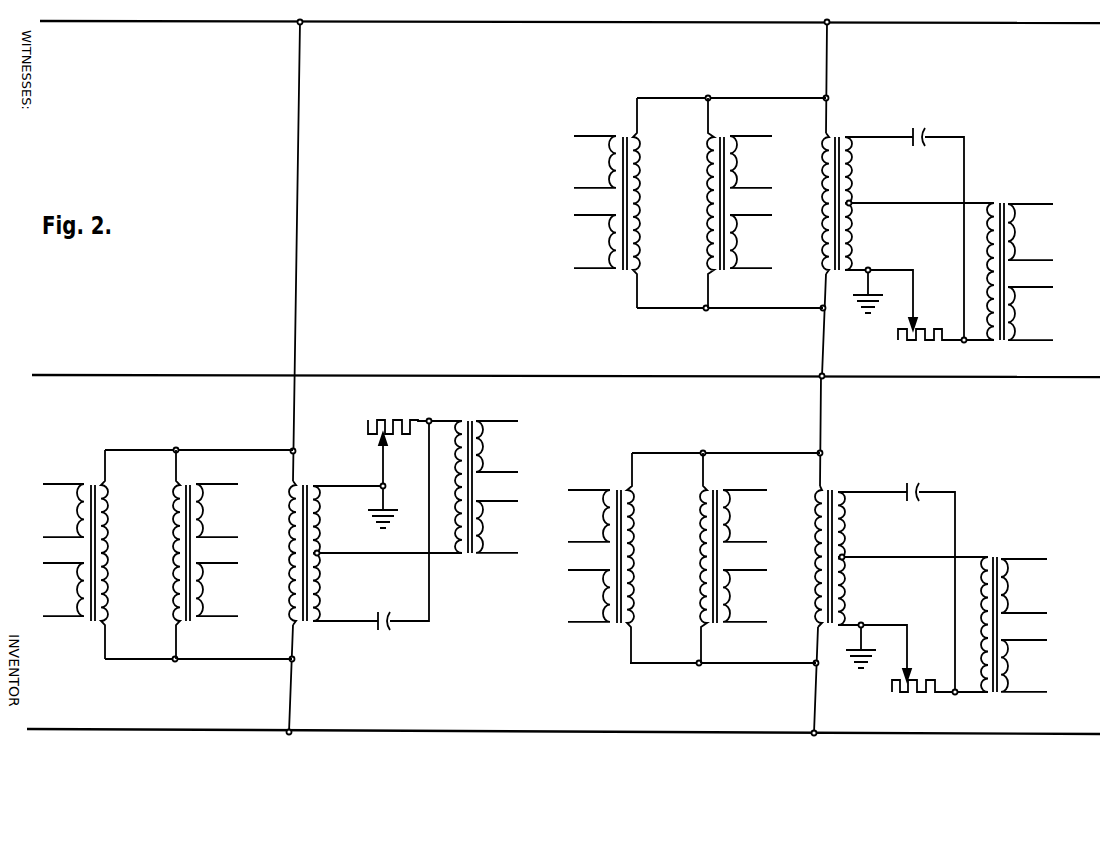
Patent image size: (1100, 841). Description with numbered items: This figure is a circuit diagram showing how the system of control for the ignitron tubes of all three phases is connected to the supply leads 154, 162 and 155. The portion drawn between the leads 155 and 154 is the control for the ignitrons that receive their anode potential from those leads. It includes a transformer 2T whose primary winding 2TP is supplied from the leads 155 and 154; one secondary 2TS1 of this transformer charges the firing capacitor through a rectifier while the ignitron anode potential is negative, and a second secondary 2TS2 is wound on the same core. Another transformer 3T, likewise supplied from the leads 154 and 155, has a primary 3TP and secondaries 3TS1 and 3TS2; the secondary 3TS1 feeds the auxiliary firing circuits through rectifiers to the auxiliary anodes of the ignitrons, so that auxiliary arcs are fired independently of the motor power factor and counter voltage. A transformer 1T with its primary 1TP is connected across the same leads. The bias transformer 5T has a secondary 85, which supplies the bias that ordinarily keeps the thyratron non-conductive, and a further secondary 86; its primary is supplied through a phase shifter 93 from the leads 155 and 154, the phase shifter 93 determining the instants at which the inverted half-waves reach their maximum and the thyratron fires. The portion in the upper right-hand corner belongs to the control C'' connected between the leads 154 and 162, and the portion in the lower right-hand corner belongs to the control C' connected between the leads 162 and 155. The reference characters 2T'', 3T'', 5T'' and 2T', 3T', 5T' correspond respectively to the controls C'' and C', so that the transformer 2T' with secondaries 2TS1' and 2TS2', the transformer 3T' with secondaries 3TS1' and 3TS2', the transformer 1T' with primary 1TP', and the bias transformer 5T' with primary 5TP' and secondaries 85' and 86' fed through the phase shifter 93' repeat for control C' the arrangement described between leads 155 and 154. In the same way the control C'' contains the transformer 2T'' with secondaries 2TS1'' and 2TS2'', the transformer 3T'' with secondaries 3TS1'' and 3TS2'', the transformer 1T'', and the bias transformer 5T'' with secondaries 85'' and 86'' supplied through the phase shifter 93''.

The supply lead 154 is at (134, 23).
The supply lead 162 is at (118, 375).
The supply lead 155 is at (100, 729).
The first transformer 1T is at (315, 541).
The primary winding of first transformer 1TP is at (273, 553).
The transformer 2T is at (82, 533).
The primary winding 2TP is at (107, 498).
The secondary 2TS1 is at (52, 589).
The second secondary winding of second transformer 2TS2 is at (47, 510).
The transformer 3T is at (199, 538).
The primary winding of third transformer 3TP is at (154, 554).
The secondary 3TS1 is at (226, 510).
The second secondary winding of third transformer 3TS2 is at (226, 589).
The bias transformer 5T is at (469, 501).
The secondary 85 is at (497, 527).
The secondary winding of fifth transformer 86 is at (497, 446).
The phase shifter 93 is at (387, 525).
The control C' is at (755, 547).
The first transformer of second channel 1T' is at (844, 543).
The primary winding of first transformer of second channel 1TP' is at (800, 556).
The transformer 2T' is at (618, 558).
The secondary 2TS1' is at (581, 516).
The second secondary winding 2TS2' is at (581, 596).
The transformer 3T' is at (719, 558).
The secondary 3TS1' is at (751, 596).
The second secondary winding 3TS2' is at (750, 516).
The bias transformer 5T' is at (999, 613).
The primary 5TP' is at (999, 637).
The secondary 85' is at (1024, 586).
The secondary winding 86' is at (1024, 666).
The phase shifter 93' is at (913, 589).
The control C'' is at (731, 188).
The first transformer of third channel 1T'' is at (842, 187).
The transformer 2T'' is at (622, 203).
The secondary 2TS1'' is at (584, 162).
The second secondary winding 2TS2'' is at (584, 241).
The transformer 3T'' is at (729, 203).
The secondary 3TS1'' is at (760, 241).
The second secondary winding 3TS2'' is at (759, 162).
The bias transformer 5T'' is at (1010, 259).
The secondary 85'' is at (1030, 232).
The secondary winding 86'' is at (1030, 313).
The phase shifter 93'' is at (919, 235).